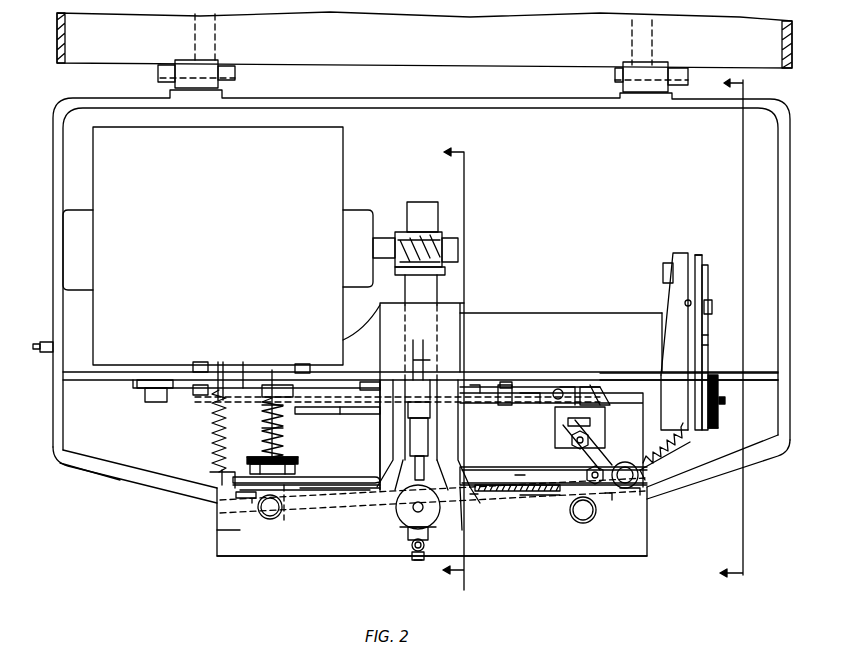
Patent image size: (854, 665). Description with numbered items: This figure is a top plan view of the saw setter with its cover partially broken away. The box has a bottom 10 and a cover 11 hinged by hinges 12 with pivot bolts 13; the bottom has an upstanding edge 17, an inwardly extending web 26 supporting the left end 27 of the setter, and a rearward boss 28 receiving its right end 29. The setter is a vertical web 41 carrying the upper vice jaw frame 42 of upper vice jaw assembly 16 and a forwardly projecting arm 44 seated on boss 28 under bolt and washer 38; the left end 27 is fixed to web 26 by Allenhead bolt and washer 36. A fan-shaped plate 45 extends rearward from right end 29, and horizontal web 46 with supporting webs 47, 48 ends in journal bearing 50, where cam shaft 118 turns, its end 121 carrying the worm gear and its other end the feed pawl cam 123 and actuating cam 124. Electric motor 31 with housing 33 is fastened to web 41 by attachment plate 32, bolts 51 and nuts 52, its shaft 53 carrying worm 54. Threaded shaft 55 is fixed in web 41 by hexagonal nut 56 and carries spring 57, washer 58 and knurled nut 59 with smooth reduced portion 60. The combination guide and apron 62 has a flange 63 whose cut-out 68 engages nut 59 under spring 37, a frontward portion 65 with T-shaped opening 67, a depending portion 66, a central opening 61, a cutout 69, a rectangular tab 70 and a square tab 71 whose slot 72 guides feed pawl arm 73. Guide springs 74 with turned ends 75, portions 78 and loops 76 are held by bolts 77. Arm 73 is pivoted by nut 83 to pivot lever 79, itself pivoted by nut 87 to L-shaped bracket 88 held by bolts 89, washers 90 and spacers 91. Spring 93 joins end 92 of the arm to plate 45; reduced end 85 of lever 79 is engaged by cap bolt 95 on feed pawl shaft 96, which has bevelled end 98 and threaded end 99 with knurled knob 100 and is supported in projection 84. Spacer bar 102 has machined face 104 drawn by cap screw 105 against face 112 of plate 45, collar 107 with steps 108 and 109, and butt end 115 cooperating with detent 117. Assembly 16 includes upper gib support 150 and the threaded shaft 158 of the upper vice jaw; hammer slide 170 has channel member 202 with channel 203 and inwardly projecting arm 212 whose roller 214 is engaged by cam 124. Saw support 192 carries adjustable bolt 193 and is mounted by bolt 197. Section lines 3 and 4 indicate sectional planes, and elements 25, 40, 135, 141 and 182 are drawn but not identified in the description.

The section line 3- 3 is at (743, 331).
The section line 4- 4 is at (464, 376).
The bottom 10 is at (411, 89).
The cover 11 is at (776, 35).
The hinges 12 is at (176, 72).
The pivot bolts 13 is at (235, 75).
The upper vice jaw assembly 16 is at (391, 517).
The upstanding edge 17 is at (122, 477).
The shelf plate 25 is at (756, 374).
The rectangular inwardly extending web 26 is at (85, 376).
The left end of the setter apparatus 27 is at (133, 384).
The boss 28 is at (645, 483).
The right end of the setter apparatus 29 is at (683, 353).
The electric motor 31 is at (352, 140).
The attachment plate 32 is at (220, 362).
The housing 33 is at (237, 181).
The Allenhead bolt and washer 36 is at (155, 403).
The spring 37 is at (212, 442).
The Allenhead bolt and washer 38 is at (626, 489).
The knob 40 is at (43, 342).
The vertical web 41 is at (241, 364).
The upper vice jaw frame 42 is at (470, 442).
The forwardly projecting arm 44 is at (663, 459).
The fan-shaped plate 45 is at (681, 253).
The horizontal web 46 is at (557, 326).
The supporting web 47 is at (425, 360).
The supporting web 48 is at (370, 352).
The circular journal bearing 50 is at (462, 303).
The bolts 51 is at (198, 396).
The nuts 52 is at (198, 362).
The shaft 53 is at (385, 236).
The worm 54 is at (400, 232).
The threaded shaft 55 is at (262, 410).
The hexagonal nut 56 is at (272, 385).
The spring 57 is at (262, 426).
The washer 58 is at (285, 455).
The knurled nut 59 is at (298, 460).
The portion of reduced diameter 60 is at (295, 470).
The central rectangular opening 61 is at (380, 474).
The combination guide and apron 62 is at (210, 566).
The top rearwardly extending flange 63 is at (222, 477).
The frontwardly extending portion 65 is at (217, 533).
The second depending portion 66 is at (265, 558).
The T-shaped opening 67 is at (405, 528).
The cut-out section 68 is at (298, 500).
The cutout 69 is at (560, 500).
The rectangular tab 70 is at (378, 498).
The square tab 71 is at (470, 467).
The slot 72 is at (463, 520).
The feed pawl arm 73 is at (520, 468).
The springs 74 is at (537, 500).
The inwardly turned ends 75 is at (478, 500).
The spring loops 76 is at (268, 520).
The bolts 77 is at (248, 500).
The extending portion 78 is at (510, 500).
The feed pawl pivot arm 79 is at (569, 454).
The nut 83 is at (596, 486).
The projection 84 is at (505, 383).
The end of reduced dimension 85 is at (574, 386).
The nut 87 is at (572, 440).
The L-shaped supporting bracket 88 is at (605, 424).
The Allenhead bolts 89 is at (568, 422).
The washer 90 is at (604, 387).
The machined spacers 91 is at (592, 385).
The end of the feed pawl arm 92 is at (640, 497).
The spring 93 is at (668, 448).
The cap bolt 95 is at (559, 389).
The feed pawl shaft 96 is at (536, 392).
The bevelled end 98 is at (478, 385).
The threaded end 99 is at (722, 405).
The knurled knob 100 is at (716, 428).
The feed pawl spacer bar 102 is at (697, 250).
The extending circular face 104 is at (692, 302).
The cap screw 105 is at (713, 307).
The machined collar 107 is at (708, 335).
The step 108 is at (708, 346).
The step 109 is at (715, 376).
The face 112 is at (704, 285).
The butt end 115 is at (703, 262).
The detent 117 is at (663, 272).
The cam shaft 118 is at (405, 296).
The end 121 is at (425, 210).
The feed pawl cam 123 is at (368, 382).
The actuating cam 124 is at (340, 414).
The plate 135 is at (297, 412).
The bracket 141 is at (504, 406).
The upper gib support 150 is at (381, 511).
The threaded shaft 158 is at (410, 548).
The hammer slide 170 is at (403, 440).
The hub 182 is at (430, 528).
The saw support 192 is at (407, 559).
The adjustable bolt 193 is at (416, 562).
The bolt 197 is at (424, 560).
The channel member 202 is at (460, 440).
The central vertically extending channel 203 is at (415, 462).
The inwardly projecting arm 212 is at (408, 428).
The roller 214 is at (432, 392).